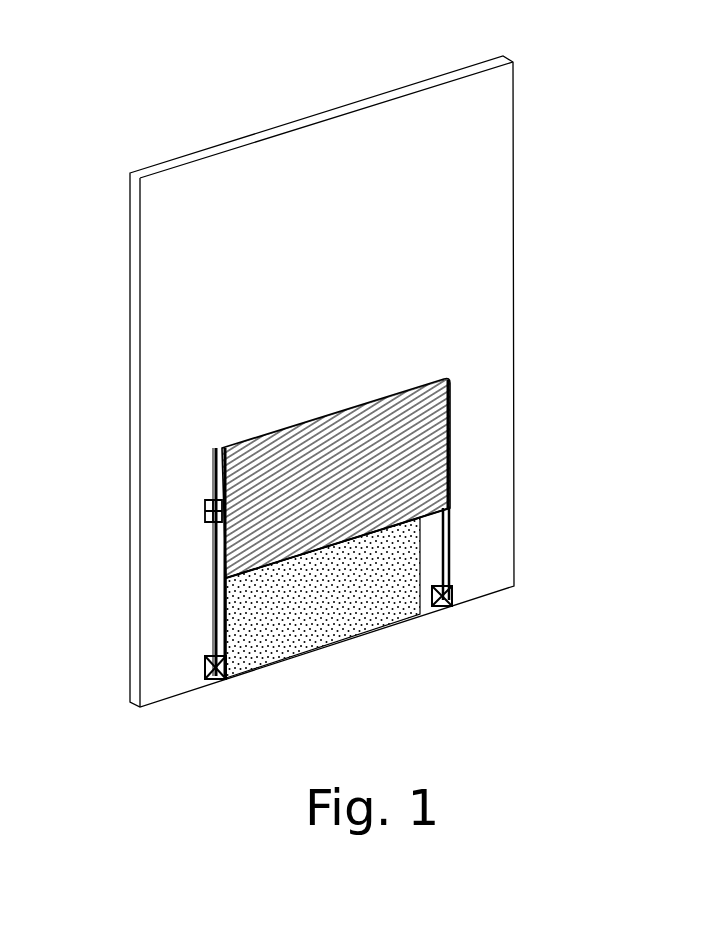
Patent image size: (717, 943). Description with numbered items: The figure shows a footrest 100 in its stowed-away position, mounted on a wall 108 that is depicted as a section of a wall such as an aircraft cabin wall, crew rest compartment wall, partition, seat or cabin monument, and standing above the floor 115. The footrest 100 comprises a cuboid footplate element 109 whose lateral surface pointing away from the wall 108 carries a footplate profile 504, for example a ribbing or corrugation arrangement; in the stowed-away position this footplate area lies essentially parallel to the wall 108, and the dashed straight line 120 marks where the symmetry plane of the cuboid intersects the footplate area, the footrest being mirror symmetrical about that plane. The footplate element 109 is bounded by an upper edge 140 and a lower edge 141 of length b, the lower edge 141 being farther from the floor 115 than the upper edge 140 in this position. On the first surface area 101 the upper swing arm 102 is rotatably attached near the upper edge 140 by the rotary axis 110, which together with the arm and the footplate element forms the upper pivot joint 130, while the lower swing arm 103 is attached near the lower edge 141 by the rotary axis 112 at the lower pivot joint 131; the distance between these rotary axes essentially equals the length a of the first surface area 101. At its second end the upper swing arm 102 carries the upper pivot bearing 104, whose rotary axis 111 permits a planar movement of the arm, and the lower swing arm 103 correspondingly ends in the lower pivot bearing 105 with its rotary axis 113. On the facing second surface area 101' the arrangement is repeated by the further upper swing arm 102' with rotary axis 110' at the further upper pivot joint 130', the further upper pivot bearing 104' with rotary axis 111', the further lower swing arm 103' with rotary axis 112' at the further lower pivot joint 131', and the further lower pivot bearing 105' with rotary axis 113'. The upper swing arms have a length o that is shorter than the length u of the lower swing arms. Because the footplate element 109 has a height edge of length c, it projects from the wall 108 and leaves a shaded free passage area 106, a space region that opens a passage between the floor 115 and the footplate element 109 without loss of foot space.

The footrest 100 is at (363, 356).
The first surface area 101 is at (180, 567).
The second surface area 101' is at (526, 429).
The upper swing arm 102 is at (139, 457).
The further upper swing arm 102' is at (515, 339).
The lower swing arm 103 is at (139, 649).
The further lower swing arm 103' is at (518, 553).
The upper pivot bearing 104 is at (143, 480).
The further upper pivot bearing 104' is at (521, 362).
The lower pivot bearing 105 is at (169, 700).
The further lower pivot bearing 105' is at (452, 629).
The free passage area 106 is at (312, 621).
The wall 108 is at (157, 252).
The footplate element 109 is at (315, 440).
The rotary axis 110 is at (195, 421).
The rotary axis 110' is at (481, 318).
The rotary axis 111 is at (146, 513).
The rotary axis 111' is at (548, 394).
The rotary axis 112 is at (143, 612).
The rotary axis 112' is at (520, 515).
The rotary axis 113 is at (224, 717).
The rotary axis 113' is at (509, 629).
The floor 115 is at (440, 734).
The straight line 120 is at (337, 412).
The upper pivot joint 130 is at (154, 525).
The further upper pivot joint 130' is at (525, 457).
The lower pivot joint 131 is at (267, 666).
The further lower pivot joint 131' is at (522, 477).
The upper edge 140 is at (237, 404).
The lower edge 141 is at (372, 553).
The footplate profile 504 is at (381, 412).